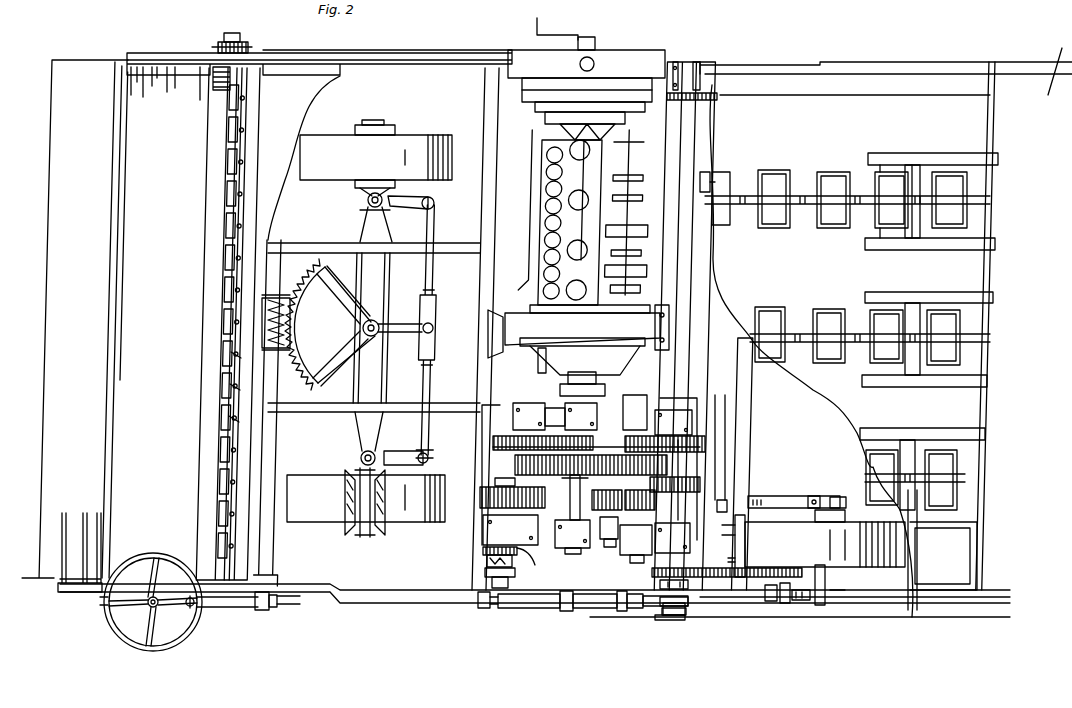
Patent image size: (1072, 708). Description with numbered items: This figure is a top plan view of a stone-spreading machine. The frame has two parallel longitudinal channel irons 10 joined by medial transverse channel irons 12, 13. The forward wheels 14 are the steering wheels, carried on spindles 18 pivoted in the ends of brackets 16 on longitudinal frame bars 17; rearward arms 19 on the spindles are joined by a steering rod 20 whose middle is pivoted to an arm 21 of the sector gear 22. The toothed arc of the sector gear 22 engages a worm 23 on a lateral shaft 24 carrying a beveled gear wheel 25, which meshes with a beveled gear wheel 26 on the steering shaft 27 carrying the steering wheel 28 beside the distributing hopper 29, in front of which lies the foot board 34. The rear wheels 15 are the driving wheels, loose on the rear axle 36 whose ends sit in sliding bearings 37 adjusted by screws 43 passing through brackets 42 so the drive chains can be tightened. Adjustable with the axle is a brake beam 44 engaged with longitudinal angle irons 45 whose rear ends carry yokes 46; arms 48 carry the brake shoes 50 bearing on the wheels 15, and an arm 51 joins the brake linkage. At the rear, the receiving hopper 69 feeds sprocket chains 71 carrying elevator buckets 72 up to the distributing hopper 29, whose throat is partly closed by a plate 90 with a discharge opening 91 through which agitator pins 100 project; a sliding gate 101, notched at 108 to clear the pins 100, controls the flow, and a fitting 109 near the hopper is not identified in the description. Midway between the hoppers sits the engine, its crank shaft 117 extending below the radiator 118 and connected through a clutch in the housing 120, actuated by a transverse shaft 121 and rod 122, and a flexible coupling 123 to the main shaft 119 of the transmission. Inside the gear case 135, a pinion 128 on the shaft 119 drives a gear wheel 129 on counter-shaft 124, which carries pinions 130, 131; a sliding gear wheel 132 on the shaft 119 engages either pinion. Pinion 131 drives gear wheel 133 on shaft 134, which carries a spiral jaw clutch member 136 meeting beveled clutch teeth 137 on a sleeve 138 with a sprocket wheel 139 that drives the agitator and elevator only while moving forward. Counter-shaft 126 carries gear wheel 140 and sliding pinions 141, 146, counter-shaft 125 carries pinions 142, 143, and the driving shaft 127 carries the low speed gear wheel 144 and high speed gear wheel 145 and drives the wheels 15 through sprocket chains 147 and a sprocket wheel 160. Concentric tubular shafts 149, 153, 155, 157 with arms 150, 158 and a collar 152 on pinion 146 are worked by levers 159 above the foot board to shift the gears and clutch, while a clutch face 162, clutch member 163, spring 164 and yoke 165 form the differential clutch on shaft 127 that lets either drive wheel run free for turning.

The channel irons 10 is at (448, 60).
The medial transverse channel iron 12 is at (486, 200).
The medial transverse channel iron 13 is at (690, 140).
The forward wheels 14 is at (438, 135).
The rear wheels 15 is at (895, 547).
The brackets 16 is at (370, 215).
The frame bars 17 is at (298, 243).
The spindles 18 is at (368, 535).
The arms 19 is at (415, 208).
The steering rod 20 is at (433, 272).
The arm 21 is at (405, 320).
The sector gear 22 is at (337, 290).
The worm 23 is at (290, 336).
The shaft 24 is at (270, 460).
The beveled gear wheel 25 is at (290, 604).
The beveled gear wheel 26 is at (262, 610).
The steering shaft 27 is at (217, 608).
The steering wheel 28 is at (142, 648).
The distributing hopper 29 is at (112, 250).
The foot board 34 is at (75, 295).
The rear axle 36 is at (835, 405).
The sliding bearings 37 is at (838, 602).
The bracket 42 is at (787, 603).
The adjusting screw 43 is at (805, 600).
The brake beam 44 is at (752, 397).
The angle irons 45 is at (705, 165).
The yokes 46 is at (846, 502).
The arms 48 is at (746, 541).
The brake shoes 50 is at (746, 552).
The arm 51 is at (727, 490).
The receiving hopper 69 is at (886, 63).
The sprocket chains 71 is at (806, 220).
The elevator buckets 72 is at (817, 172).
The plate 90 is at (212, 182).
The discharge opening 91 is at (230, 140).
The agitator pins 100 is at (229, 416).
The sliding gate 101 is at (232, 238).
The notches 108 is at (233, 290).
The fitting 109 is at (222, 42).
The crank shaft 117 is at (598, 47).
The radiator 118 is at (632, 62).
The main shaft 119 is at (570, 506).
The housing 120 is at (574, 230).
The transverse shaft 121 is at (650, 322).
The actuating rod 122 is at (538, 363).
The flexible coupling 123 is at (578, 372).
The counter-shaft 124 is at (535, 548).
The counter-shaft 125 is at (608, 550).
The counter-shaft 126 is at (636, 563).
The driving shaft 127 is at (688, 326).
The pinion 128 is at (529, 416).
The gear wheel 129 is at (493, 443).
The pinion 130 is at (520, 462).
The pinion 131 is at (583, 496).
The sliding gear wheel 132 is at (598, 475).
The gear wheel 133 is at (480, 494).
The shaft 134 is at (496, 590).
The gear case 135 is at (482, 462).
The spiral jaw clutch member 136 is at (485, 571).
The beveled clutch teeth 137 is at (487, 560).
The sleeve 138 is at (483, 549).
The sprocket wheel 139 is at (539, 567).
The gear wheel 140 is at (718, 395).
The pinion 141 is at (672, 538).
The pinion 142 is at (625, 536).
The pinion 143 is at (571, 416).
The low speed gear wheel 144 is at (665, 440).
The high speed gear wheel 145 is at (705, 498).
The pinion 146 is at (652, 442).
The sprocket chains 147 is at (772, 601).
The tubular shaft 149 is at (622, 611).
The arm 150 is at (637, 608).
The collar 152 is at (587, 383).
The tubular shaft 153 is at (600, 608).
The tubular shaft 155 is at (553, 608).
The tubular shaft 157 is at (482, 607).
The arm 158 is at (524, 608).
The levers 159 is at (90, 514).
The sprocket wheel 160 is at (700, 106).
The clutch face 162 is at (690, 568).
The clutch member 163 is at (688, 584).
The spring 164 is at (688, 602).
The yoke 165 is at (690, 615).